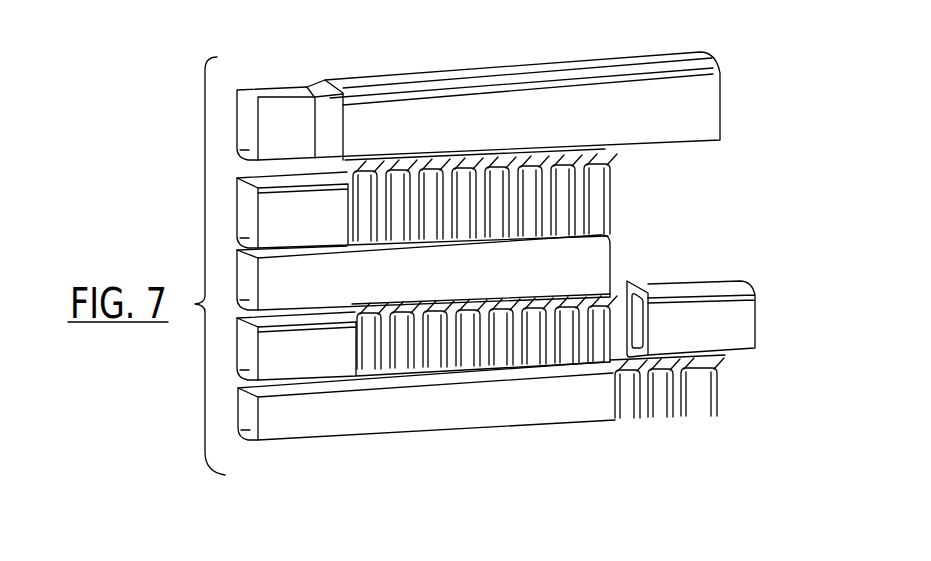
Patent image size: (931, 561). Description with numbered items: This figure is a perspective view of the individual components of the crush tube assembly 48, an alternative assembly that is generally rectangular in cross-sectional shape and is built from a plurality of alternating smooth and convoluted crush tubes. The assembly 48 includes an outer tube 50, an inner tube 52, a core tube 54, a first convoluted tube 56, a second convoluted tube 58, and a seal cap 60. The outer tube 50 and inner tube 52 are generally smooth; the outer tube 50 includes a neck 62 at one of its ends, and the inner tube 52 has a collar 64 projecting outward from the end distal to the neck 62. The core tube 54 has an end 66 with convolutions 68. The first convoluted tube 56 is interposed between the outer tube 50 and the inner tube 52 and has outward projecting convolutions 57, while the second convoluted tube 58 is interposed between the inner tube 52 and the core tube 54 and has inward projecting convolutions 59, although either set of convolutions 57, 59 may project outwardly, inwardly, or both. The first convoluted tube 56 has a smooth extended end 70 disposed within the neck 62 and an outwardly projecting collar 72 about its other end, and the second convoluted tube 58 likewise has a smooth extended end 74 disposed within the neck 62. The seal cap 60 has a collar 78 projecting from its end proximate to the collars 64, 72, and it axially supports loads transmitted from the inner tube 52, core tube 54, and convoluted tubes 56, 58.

The crush tube assembly 48 is at (772, 127).
The outer tube 50 is at (297, 138).
The inner tube 52 is at (317, 297).
The core tube 54 is at (315, 427).
The first convoluted tube 56 is at (313, 228).
The convolutions 57 is at (345, 169).
The second convoluted tube 58 is at (315, 358).
The convolutions 59 is at (360, 363).
The seal cap 60 is at (726, 337).
The neck 62 is at (275, 88).
The collar 64 is at (612, 250).
The end 66 is at (697, 417).
The convolutions 68 is at (615, 420).
The smooth extended end 70 is at (237, 178).
The collar 72 is at (612, 170).
The smooth extended end 74 is at (258, 328).
The collar 78 is at (645, 283).